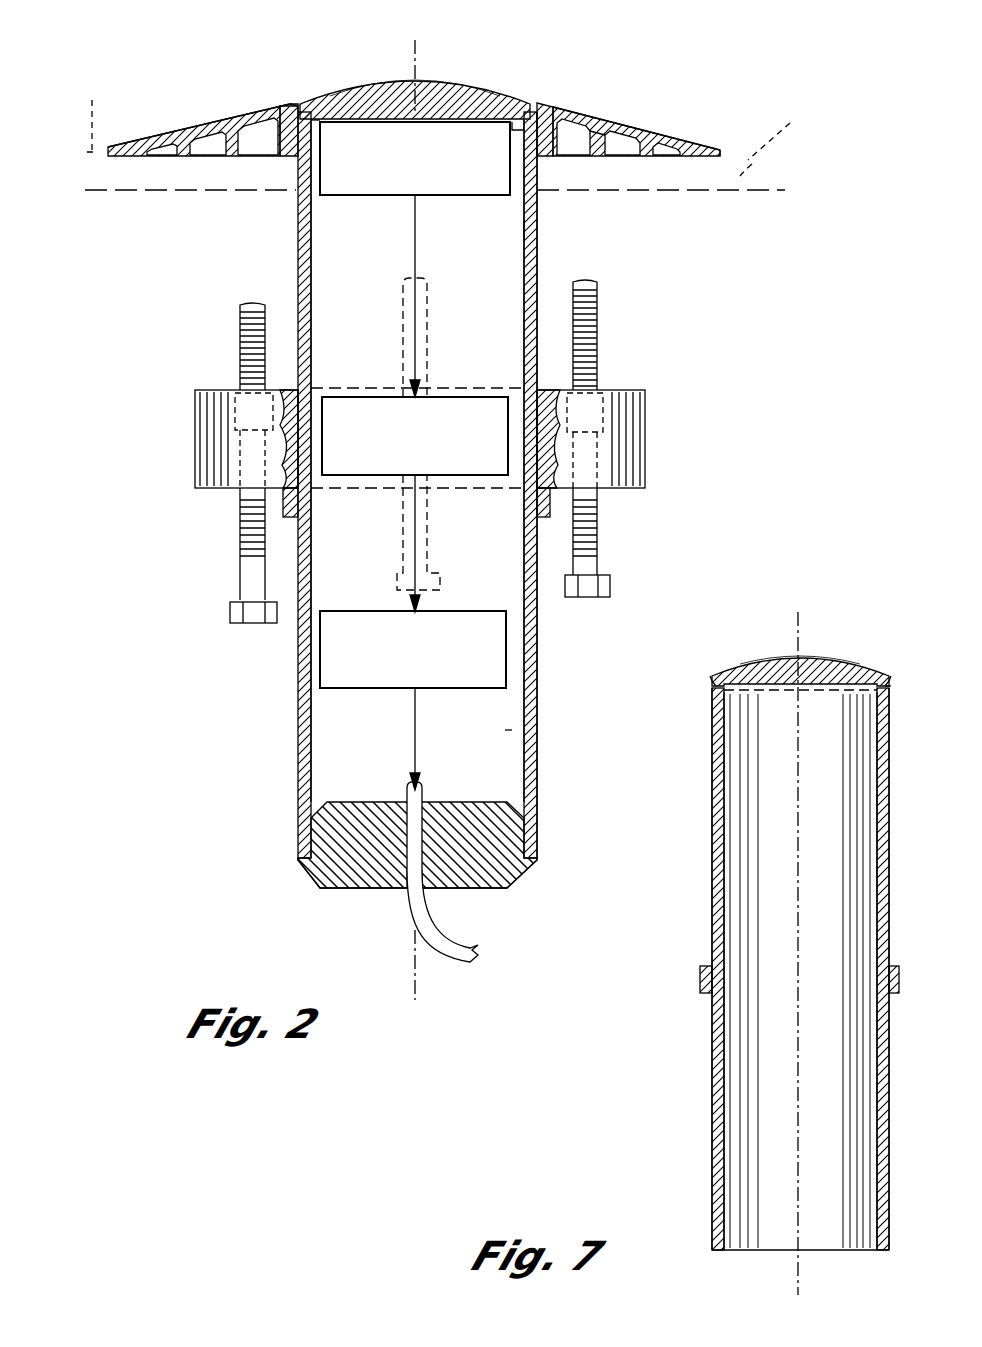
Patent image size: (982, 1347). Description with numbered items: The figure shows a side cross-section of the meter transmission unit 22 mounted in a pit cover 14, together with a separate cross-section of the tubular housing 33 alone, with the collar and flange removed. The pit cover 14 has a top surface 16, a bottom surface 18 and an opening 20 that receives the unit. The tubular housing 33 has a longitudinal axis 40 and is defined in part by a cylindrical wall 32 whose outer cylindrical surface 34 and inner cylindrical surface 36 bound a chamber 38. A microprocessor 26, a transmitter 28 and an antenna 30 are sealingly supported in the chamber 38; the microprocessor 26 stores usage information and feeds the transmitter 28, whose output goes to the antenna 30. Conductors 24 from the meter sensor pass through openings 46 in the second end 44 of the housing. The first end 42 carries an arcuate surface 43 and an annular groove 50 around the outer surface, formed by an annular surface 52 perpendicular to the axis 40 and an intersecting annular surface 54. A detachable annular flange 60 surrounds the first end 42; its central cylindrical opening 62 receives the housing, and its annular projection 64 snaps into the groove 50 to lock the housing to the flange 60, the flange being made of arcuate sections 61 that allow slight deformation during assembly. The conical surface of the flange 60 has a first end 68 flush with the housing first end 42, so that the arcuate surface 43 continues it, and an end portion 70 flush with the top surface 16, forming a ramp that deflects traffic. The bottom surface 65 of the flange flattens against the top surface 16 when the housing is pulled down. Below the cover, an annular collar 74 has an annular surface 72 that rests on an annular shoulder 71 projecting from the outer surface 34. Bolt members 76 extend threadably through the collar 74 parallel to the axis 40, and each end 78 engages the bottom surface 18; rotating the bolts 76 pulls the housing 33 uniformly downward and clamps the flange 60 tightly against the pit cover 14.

In FIG. 2, the pit cover 14 is at (775, 134).
In FIG. 2, the top surface 16 is at (92, 111).
In FIG. 2, the bottom surface 18 is at (150, 192).
In FIG. 2, the opening 20 is at (312, 165).
In FIG. 2, the meter transmission unit 22 is at (545, 685).
In FIG. 2, the conductors 24 is at (445, 940).
In FIG. 2, the microprocessor 26 is at (353, 690).
In FIG. 2, the transmitter 28 is at (363, 392).
In FIG. 2, the antenna 30 is at (460, 196).
In FIG. 2, the cylindrical wall 32 is at (542, 310).
In FIG. 7, the cylindrical wall 32 is at (890, 1092).
In FIG. 2, the tubular housing 33 is at (538, 630).
In FIG. 7, the tubular housing 33 is at (892, 956).
In FIG. 2, the outer cylindrical surface 34 is at (540, 268).
In FIG. 7, the outer cylindrical surface 34 is at (892, 678).
In FIG. 2, the inner cylindrical surface 36 is at (522, 225).
In FIG. 7, the inner cylindrical surface 36 is at (738, 860).
In FIG. 2, the chamber 38 is at (507, 730).
In FIG. 7, the chamber 38 is at (772, 910).
In FIG. 2, the longitudinal axis 40 is at (433, 38).
In FIG. 7, the longitudinal axis 40 is at (820, 610).
In FIG. 2, the first end 42 is at (480, 82).
In FIG. 7, the first end 42 is at (835, 667).
In FIG. 2, the arcuate surface 43 is at (452, 90).
In FIG. 7, the arcuate surface 43 is at (765, 660).
In FIG. 2, the second end 44 is at (337, 890).
In FIG. 2, the openings 46 is at (410, 870).
In FIG. 2, the annular groove 50 is at (296, 105).
In FIG. 7, the annular groove 50 is at (892, 689).
In FIG. 7, the annular surface 52 is at (710, 681).
In FIG. 7, the annular surface 54 is at (893, 696).
In FIG. 2, the detachable annular flange 60 is at (598, 110).
In FIG. 2, the arcuate sections 61 is at (632, 125).
In FIG. 2, the cylindrical opening 62 is at (515, 172).
In FIG. 2, the annular projection 64 is at (560, 125).
In FIG. 2, the bottom surface 65 is at (247, 158).
In FIG. 2, the first end 68 is at (302, 110).
In FIG. 2, the end portion 70 is at (712, 146).
In FIG. 7, the annular shoulder 71 is at (900, 985).
In FIG. 2, the annular surface 72 is at (215, 490).
In FIG. 2, the annular collar 74 is at (650, 440).
In FIG. 2, the bolt members 76 is at (233, 612).
In FIG. 2, the end 78 is at (250, 303).